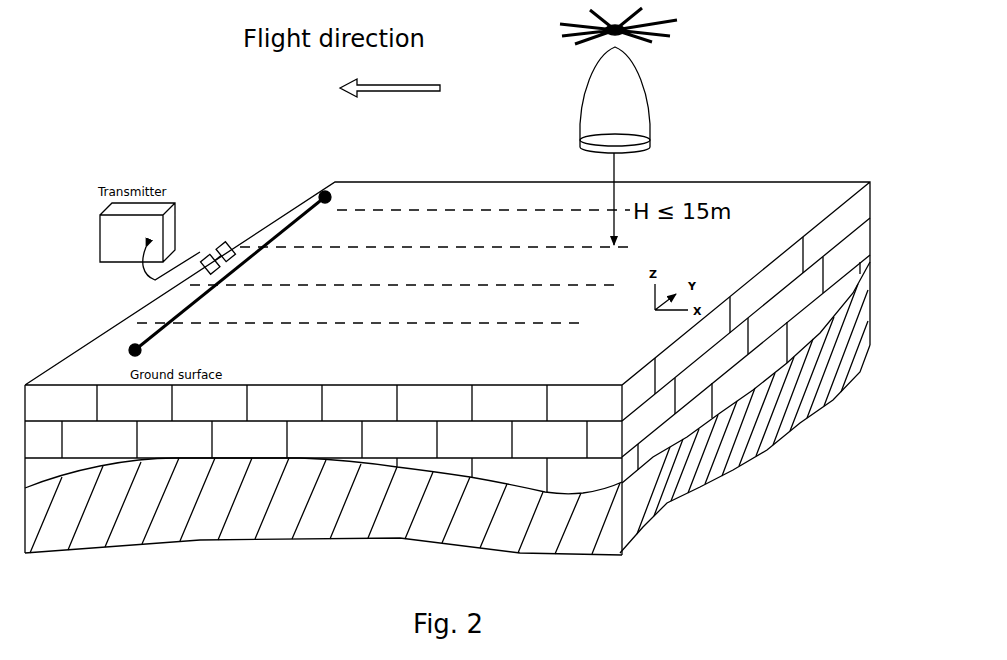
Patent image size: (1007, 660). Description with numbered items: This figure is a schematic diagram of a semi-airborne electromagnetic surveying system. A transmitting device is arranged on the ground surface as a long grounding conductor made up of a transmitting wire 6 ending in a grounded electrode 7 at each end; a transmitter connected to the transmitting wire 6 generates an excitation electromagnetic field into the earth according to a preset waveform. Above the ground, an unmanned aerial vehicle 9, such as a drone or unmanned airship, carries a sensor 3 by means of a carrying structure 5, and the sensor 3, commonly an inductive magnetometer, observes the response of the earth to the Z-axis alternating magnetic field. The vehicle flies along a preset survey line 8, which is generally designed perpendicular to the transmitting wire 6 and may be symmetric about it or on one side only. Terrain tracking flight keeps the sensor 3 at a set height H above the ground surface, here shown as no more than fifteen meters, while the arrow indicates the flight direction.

The sensor 3 is at (633, 141).
The carrying structure 5 is at (572, 146).
The transmitting wire 6 is at (165, 308).
The grounded electrode 7 is at (314, 192).
The survey line 8 is at (552, 328).
The unmanned aerial vehicle 9 is at (552, 22).